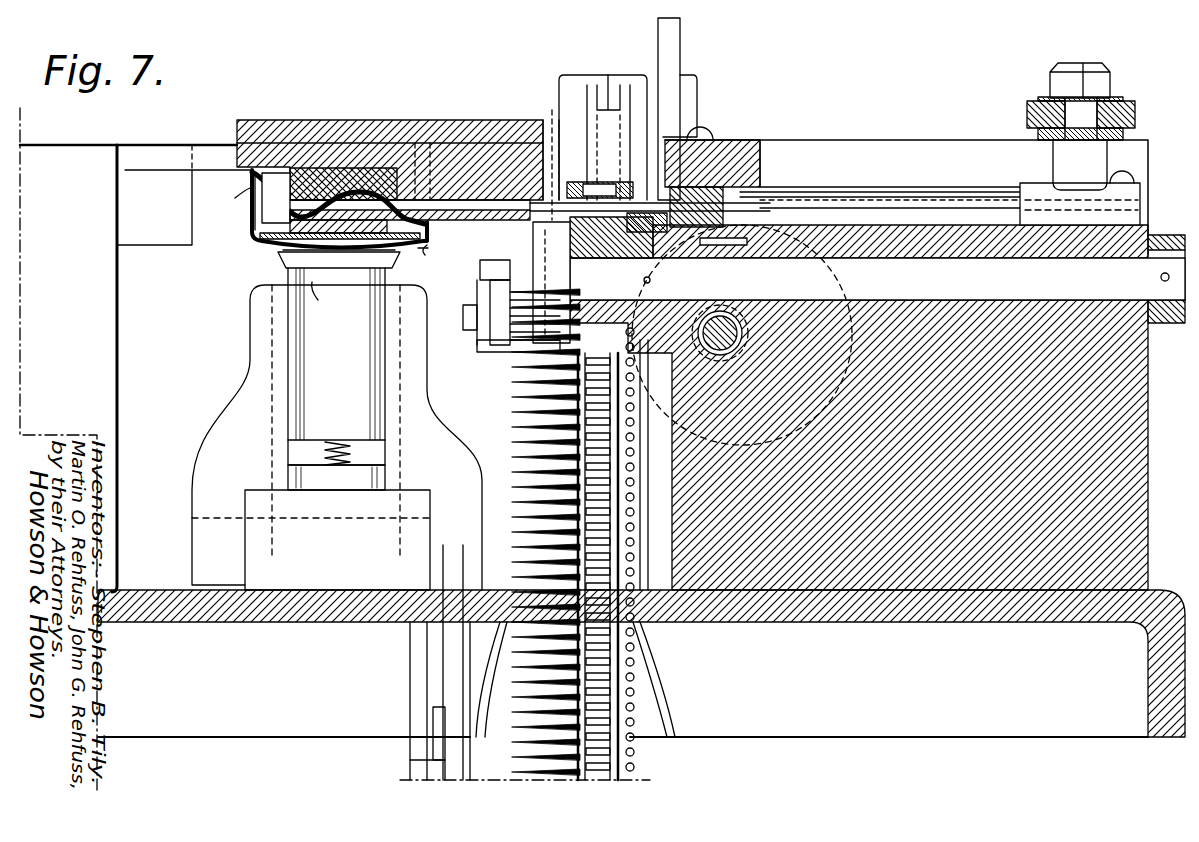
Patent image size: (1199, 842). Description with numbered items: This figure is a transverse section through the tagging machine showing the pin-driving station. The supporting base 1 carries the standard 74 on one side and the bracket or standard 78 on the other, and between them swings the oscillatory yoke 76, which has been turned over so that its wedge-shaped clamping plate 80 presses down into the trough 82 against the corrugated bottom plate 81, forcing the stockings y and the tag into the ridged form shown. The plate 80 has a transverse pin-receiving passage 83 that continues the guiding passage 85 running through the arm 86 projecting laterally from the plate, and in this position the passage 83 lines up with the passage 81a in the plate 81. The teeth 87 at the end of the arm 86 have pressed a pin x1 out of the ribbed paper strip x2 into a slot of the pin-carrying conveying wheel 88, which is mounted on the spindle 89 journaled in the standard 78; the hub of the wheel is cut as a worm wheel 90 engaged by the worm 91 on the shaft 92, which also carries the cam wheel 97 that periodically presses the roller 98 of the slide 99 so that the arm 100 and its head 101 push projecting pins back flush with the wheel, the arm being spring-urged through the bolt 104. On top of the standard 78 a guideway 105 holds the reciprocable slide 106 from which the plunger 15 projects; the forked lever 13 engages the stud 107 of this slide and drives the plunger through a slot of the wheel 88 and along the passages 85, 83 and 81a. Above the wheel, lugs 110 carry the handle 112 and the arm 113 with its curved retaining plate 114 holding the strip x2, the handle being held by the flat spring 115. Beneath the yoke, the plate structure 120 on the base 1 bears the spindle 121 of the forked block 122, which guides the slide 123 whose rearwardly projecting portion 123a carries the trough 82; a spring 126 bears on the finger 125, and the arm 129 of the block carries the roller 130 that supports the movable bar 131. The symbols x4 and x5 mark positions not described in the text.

The supporting base 1 is at (1158, 590).
The lever 13 is at (1135, 115).
The plunger 15 is at (804, 190).
The bracket or standard 74 is at (103, 308).
The oscillatory yoke 76 is at (278, 120).
The bracket or standard 78 is at (1115, 390).
The plate 80 is at (252, 215).
The plate 81 is at (280, 240).
The passage 81a is at (420, 255).
The trough 82 is at (255, 240).
The pin-receiving passage 83 is at (318, 168).
The guiding passage 85 is at (450, 221).
The arm 86 is at (508, 120).
The teeth 87 is at (600, 182).
The conveying wheel 88 is at (570, 245).
The spindle 89 is at (877, 279).
The worm wheel 90 is at (720, 311).
The worm 91 is at (772, 310).
The shaft 92 is at (705, 315).
The cam wheel 97 is at (826, 271).
The roller 98 is at (510, 340).
The slide 99 is at (510, 352).
The arm 100 is at (488, 278).
The head 101 is at (497, 260).
The bolt 104 is at (466, 325).
The guideway 105 is at (860, 190).
The slide 106 is at (1135, 222).
The stud 107 is at (1075, 108).
The lugs 110 is at (646, 75).
The handle arm 112 is at (680, 32).
The arm 113 is at (612, 85).
The retaining plate 114 is at (560, 185).
The flat spring 115 is at (688, 130).
The plate structure 120 is at (337, 540).
The spindle 121 is at (205, 518).
The forked block 122 is at (250, 362).
The slide 123 is at (339, 346).
The projecting portion 123a is at (340, 262).
The finger 125 is at (336, 478).
The spring 126 is at (352, 452).
The arm 129 is at (455, 655).
The roller 130 is at (445, 755).
The bar 131 is at (437, 717).
The pin x1 is at (680, 665).
The paper strip x2 is at (640, 770).
The axis x4 is at (372, 185).
The axis x5 is at (327, 299).
The stockings y is at (324, 230).